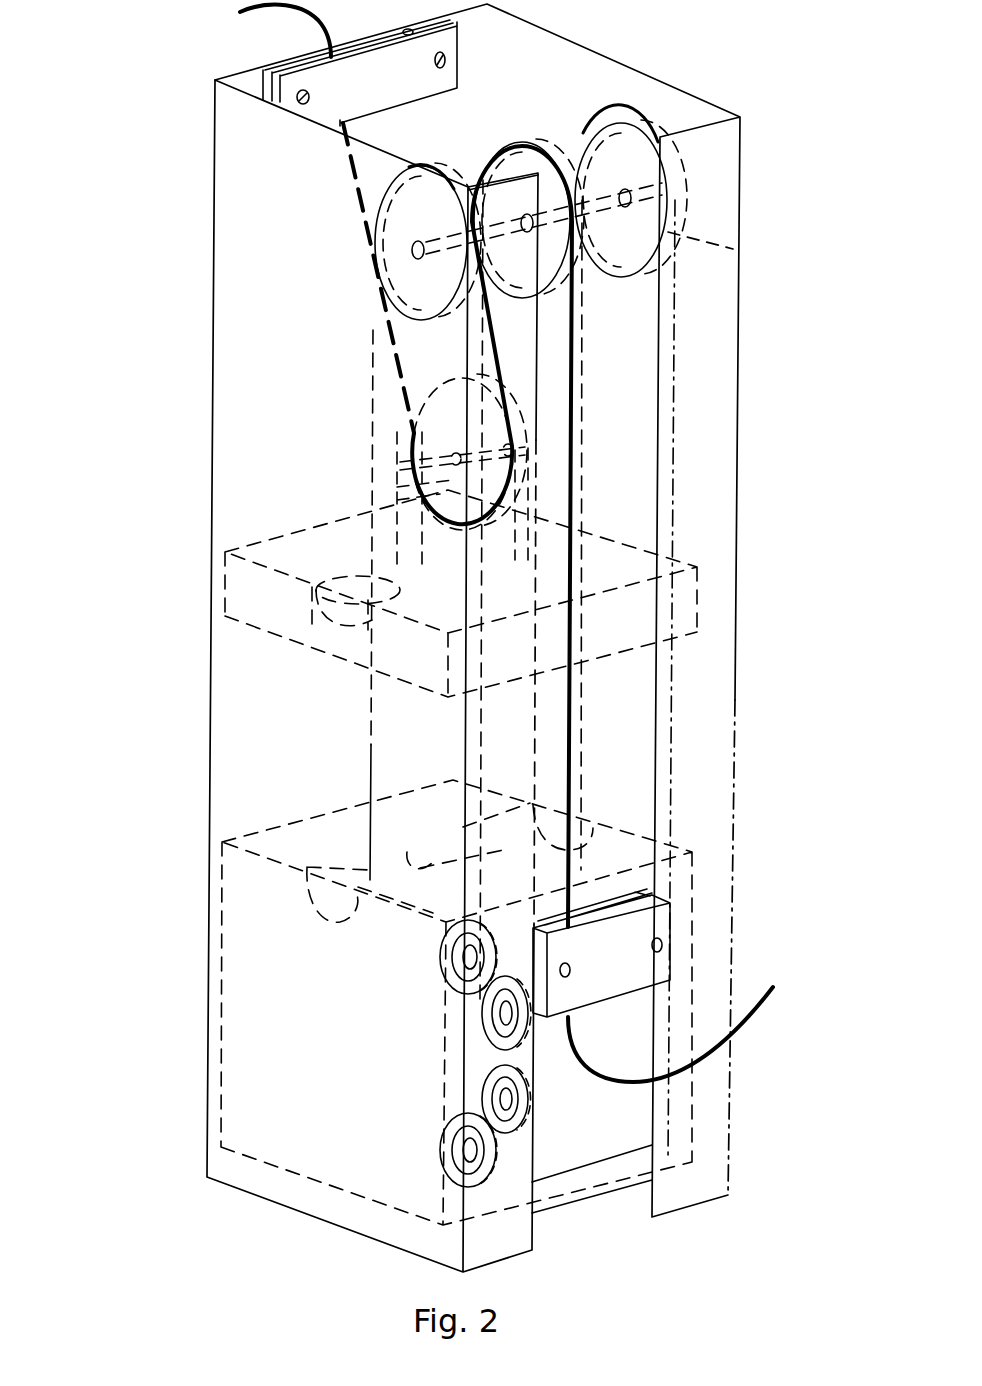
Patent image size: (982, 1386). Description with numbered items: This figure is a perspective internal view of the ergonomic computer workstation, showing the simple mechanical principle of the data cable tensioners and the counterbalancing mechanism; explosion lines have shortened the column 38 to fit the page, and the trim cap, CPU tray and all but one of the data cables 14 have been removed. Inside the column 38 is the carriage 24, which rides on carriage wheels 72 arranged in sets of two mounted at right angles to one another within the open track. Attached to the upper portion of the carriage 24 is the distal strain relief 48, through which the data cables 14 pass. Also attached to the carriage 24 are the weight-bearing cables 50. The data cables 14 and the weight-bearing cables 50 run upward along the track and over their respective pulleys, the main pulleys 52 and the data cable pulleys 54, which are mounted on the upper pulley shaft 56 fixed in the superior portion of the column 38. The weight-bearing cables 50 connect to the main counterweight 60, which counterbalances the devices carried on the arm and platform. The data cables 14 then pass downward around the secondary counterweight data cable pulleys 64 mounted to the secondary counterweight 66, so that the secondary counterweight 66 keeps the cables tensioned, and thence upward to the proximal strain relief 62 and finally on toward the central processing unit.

The data cables 14 is at (343, 130).
The carriage 24 is at (603, 1118).
The column 38 is at (213, 338).
The distal strain relief 48 is at (605, 954).
The weight-bearing cables 50 is at (468, 767).
The main pulleys 52 is at (382, 229).
The data cable pulleys 54 is at (640, 229).
The upper pulley shaft 56 is at (412, 250).
The main counterweight 60 is at (330, 1003).
The proximal strain relief 62 is at (393, 71).
The secondary counterweight data cable pulleys 64 is at (440, 425).
The secondary counterweight 66 is at (257, 586).
The carriage wheels 72 is at (441, 1146).